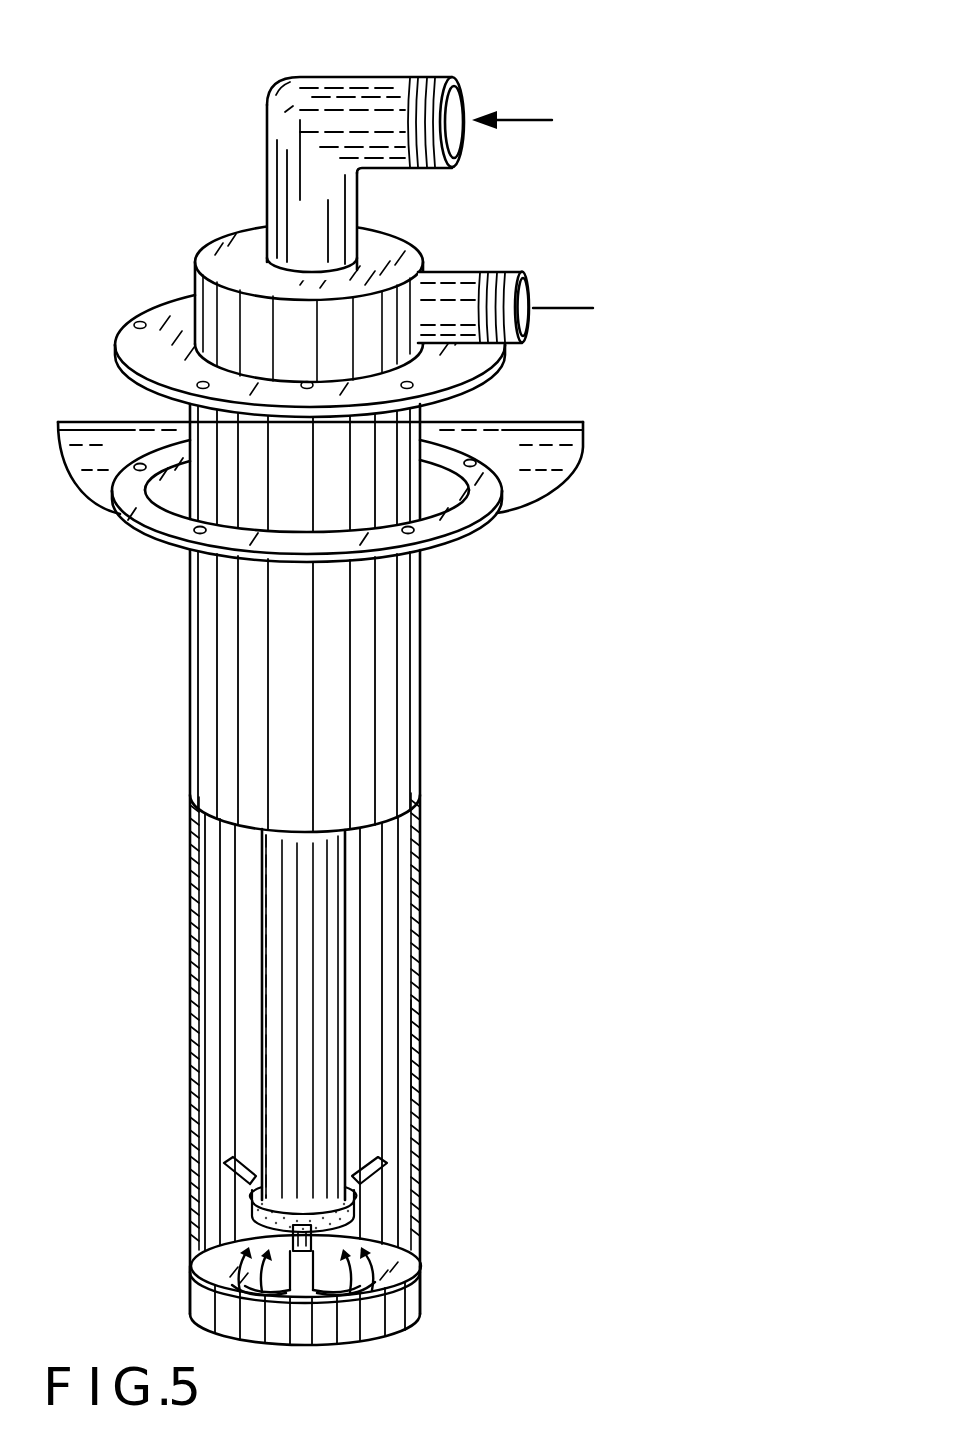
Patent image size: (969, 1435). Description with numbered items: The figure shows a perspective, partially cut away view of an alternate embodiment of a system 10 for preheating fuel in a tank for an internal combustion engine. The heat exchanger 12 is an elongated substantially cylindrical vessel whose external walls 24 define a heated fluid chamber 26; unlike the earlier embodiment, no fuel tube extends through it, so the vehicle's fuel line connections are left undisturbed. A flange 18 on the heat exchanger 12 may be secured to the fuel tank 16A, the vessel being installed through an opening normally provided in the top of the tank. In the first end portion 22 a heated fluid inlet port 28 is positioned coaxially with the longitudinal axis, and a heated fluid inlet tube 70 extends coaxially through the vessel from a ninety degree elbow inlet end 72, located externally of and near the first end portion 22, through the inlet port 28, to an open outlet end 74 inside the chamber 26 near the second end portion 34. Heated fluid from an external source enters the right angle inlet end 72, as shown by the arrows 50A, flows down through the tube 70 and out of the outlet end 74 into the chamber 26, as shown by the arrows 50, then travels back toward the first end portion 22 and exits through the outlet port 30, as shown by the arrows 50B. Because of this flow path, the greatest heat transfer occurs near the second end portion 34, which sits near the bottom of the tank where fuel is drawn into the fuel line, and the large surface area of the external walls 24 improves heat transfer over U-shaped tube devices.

The system 10 is at (478, 56).
The heat exchanger 12 is at (422, 710).
The fuel tank 16A is at (585, 450).
The flange 18 is at (160, 303).
The first end portion 22 is at (420, 270).
The external walls 24 is at (420, 838).
The heated fluid chamber 26 is at (384, 1015).
The heated fluid inlet port 28 is at (256, 259).
The outlet port 30 is at (424, 276).
The second end portion 34 is at (257, 1342).
The arrows 50 is at (370, 1284).
The arrows 50A is at (512, 122).
The arrows 50B is at (595, 308).
The heated fluid inlet tube 70 is at (348, 933).
The ninety degree elbow inlet end 72 is at (368, 77).
The open outlet end 74 is at (307, 1300).